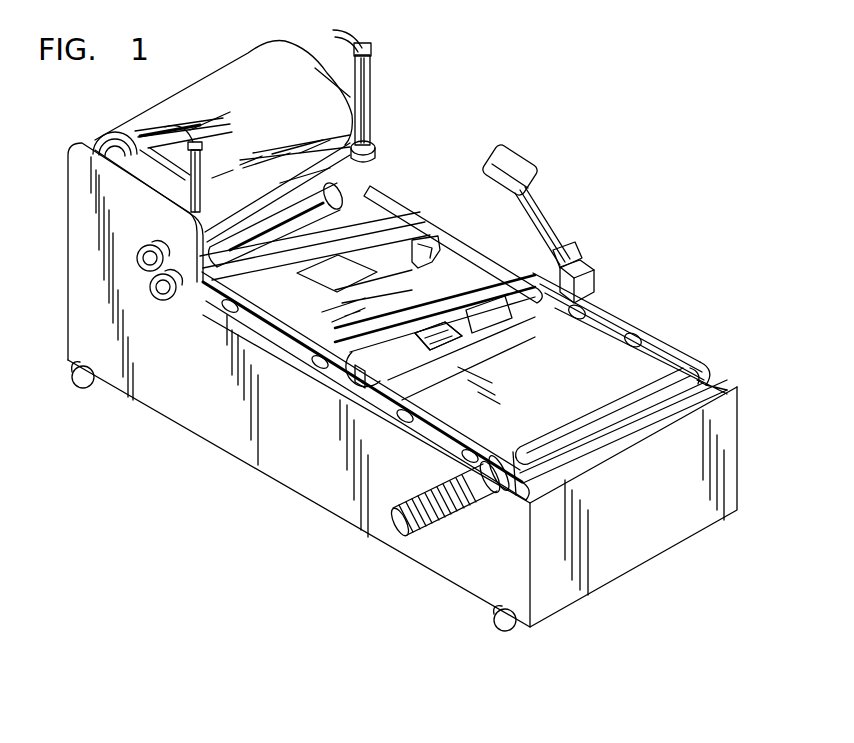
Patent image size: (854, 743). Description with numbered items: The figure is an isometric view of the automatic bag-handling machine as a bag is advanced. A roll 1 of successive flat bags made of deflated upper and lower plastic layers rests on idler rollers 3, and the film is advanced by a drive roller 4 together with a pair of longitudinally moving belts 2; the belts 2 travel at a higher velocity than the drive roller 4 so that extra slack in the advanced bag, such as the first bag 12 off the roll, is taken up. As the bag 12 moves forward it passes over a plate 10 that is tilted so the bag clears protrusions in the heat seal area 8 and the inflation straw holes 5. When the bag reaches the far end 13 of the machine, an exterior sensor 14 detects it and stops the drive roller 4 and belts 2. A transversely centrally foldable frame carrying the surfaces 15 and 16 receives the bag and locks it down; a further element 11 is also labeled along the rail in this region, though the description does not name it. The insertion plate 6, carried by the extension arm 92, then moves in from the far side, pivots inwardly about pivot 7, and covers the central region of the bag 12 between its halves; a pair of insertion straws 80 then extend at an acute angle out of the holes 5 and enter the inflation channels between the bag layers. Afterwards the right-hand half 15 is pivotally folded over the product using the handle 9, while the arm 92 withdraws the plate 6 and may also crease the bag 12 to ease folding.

The roll 1 is at (296, 58).
The belts 2 is at (262, 310).
The idler rollers 3 is at (357, 142).
The drive roller 4 is at (270, 227).
The inflation straw holes 5 is at (468, 338).
The insertion straws 80 is at (438, 336).
The insertion plate 6 is at (511, 148).
The pivot 7 is at (587, 273).
The heat seal area 8 is at (463, 300).
The handle 9 is at (445, 515).
The plate 10 is at (427, 240).
The rear rail 11 is at (600, 357).
The first bag 12 is at (372, 222).
The far end 13 is at (567, 467).
The exterior sensor 14 is at (663, 370).
The right-hand half 15 is at (440, 408).
The surface 16 is at (277, 327).
The extension arm 92 is at (550, 220).